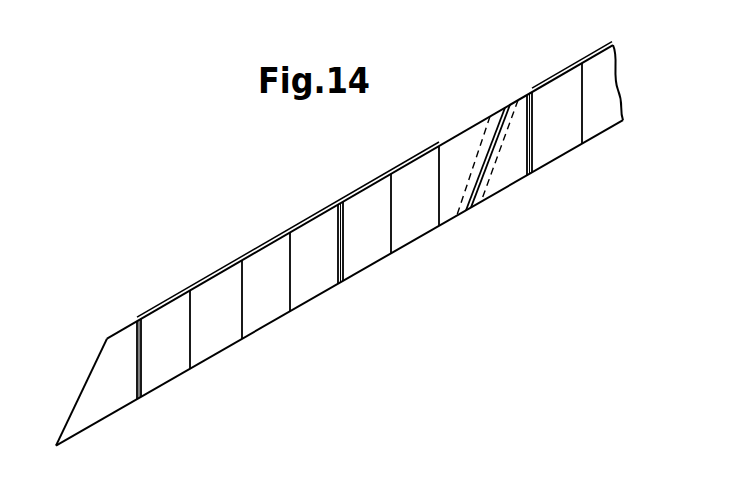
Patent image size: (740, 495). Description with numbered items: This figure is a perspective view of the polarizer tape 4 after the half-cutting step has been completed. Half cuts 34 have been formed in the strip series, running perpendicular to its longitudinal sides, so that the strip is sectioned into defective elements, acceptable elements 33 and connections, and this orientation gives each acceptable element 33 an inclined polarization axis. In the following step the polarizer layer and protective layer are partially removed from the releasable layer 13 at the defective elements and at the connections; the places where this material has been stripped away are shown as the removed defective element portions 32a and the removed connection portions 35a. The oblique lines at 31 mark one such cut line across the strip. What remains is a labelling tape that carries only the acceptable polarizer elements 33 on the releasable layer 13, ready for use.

The strip 4 is at (203, 263).
The releasable layer 13 is at (141, 320).
The oblique cut line 31 is at (500, 102).
The removed defective element portion 32a is at (313, 280).
The acceptable element 33 is at (163, 372).
The half cut 34 is at (193, 342).
The removed connection portion 35a is at (507, 178).